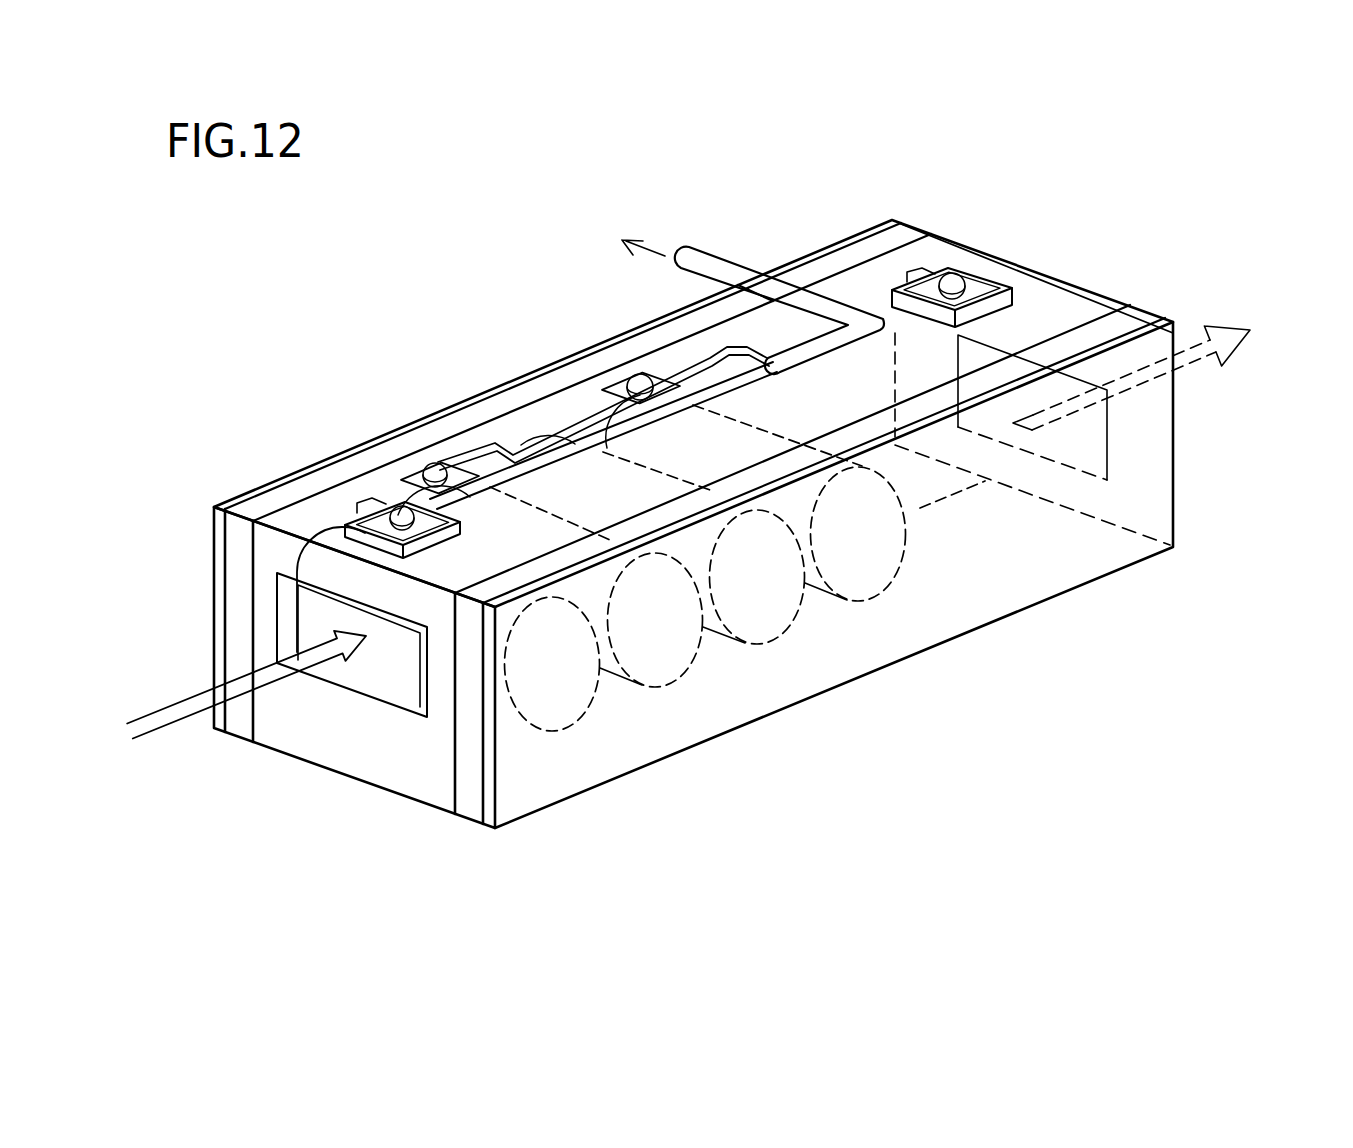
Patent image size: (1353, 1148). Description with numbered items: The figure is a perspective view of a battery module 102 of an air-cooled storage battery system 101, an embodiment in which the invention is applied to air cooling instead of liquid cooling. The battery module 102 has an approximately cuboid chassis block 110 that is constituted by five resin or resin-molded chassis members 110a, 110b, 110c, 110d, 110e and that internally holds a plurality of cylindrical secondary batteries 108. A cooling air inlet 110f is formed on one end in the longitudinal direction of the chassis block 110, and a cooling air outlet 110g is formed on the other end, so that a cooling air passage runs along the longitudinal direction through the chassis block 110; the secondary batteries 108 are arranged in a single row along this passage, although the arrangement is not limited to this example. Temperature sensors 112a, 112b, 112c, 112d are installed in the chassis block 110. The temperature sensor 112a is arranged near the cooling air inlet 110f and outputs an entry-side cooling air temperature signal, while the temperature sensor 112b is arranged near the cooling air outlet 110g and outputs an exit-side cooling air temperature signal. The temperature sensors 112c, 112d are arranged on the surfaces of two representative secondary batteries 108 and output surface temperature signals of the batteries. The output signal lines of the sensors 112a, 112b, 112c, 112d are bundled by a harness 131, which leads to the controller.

The air-cooled storage battery system 101 is at (708, 108).
The battery module 102 is at (931, 689).
The secondary batteries 108 is at (677, 680).
The chassis block 110 is at (952, 238).
The chassis member 110a is at (1005, 275).
The chassis member 110b is at (467, 793).
The chassis member 110c is at (240, 727).
The chassis member 110d is at (535, 797).
The chassis member 110e is at (213, 532).
The cooling air inlet 110f is at (293, 638).
The cooling air outlet 110g is at (1107, 457).
The temperature sensor 112a is at (385, 508).
The temperature sensor 112b is at (960, 272).
The temperature sensor 112c is at (435, 462).
The temperature sensor 112d is at (628, 380).
The harness 131 is at (717, 275).